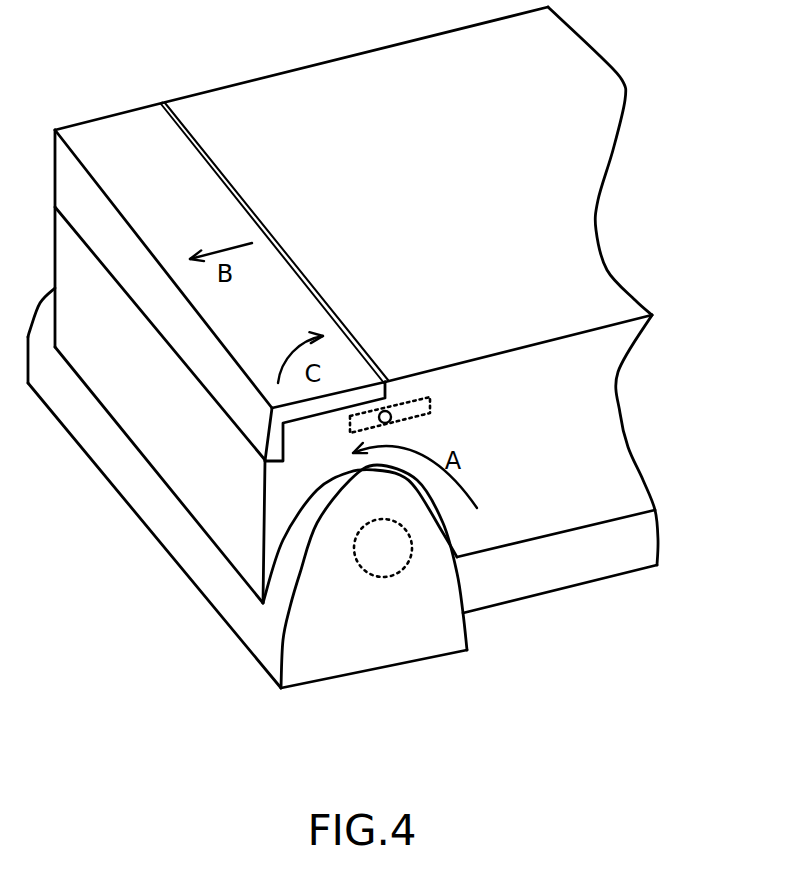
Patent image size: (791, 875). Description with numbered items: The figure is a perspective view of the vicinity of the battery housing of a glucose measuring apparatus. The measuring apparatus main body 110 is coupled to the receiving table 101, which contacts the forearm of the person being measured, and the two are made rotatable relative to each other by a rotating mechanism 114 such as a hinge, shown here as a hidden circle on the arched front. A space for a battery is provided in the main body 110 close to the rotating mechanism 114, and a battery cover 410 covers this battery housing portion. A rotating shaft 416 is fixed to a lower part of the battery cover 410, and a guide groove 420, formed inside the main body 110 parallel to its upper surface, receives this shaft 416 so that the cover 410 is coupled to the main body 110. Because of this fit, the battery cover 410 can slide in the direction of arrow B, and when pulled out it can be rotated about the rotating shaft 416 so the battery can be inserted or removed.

The battery cover 410 is at (113, 137).
The measuring apparatus main body 110 is at (618, 448).
The receiving table 101 is at (578, 567).
The rotating mechanism 114 is at (383, 552).
The rotating shaft 416 is at (391, 411).
The guide groove 420 is at (419, 408).